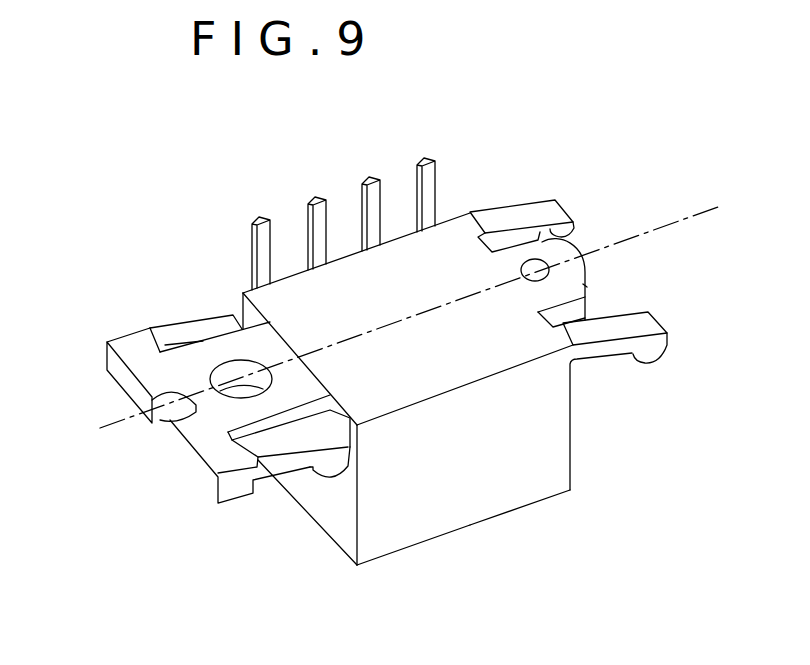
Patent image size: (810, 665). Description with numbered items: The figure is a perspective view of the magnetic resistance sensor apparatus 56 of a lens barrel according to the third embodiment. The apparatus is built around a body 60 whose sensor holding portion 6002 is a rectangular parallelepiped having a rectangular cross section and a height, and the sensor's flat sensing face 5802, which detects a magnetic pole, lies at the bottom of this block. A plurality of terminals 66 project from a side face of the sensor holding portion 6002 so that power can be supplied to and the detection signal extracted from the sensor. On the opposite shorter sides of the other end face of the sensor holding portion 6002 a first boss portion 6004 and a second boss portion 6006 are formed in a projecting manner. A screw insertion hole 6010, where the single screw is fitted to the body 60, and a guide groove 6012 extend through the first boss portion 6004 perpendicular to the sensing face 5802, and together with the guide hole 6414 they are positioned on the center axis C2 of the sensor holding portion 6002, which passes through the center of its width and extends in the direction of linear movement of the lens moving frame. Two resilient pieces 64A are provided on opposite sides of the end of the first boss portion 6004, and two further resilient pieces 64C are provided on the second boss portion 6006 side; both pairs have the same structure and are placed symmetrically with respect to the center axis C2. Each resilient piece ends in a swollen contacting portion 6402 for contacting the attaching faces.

The magnetic resistance sensor apparatus 56 is at (607, 133).
The terminals 66 is at (428, 157).
The resilient pieces 64C is at (531, 212).
The guide hole 6414 is at (544, 262).
The center axis C2 is at (697, 213).
The second boss portion 6006 is at (572, 273).
The contacting portion 6402 is at (332, 474).
The resilient pieces 64A is at (188, 328).
The screw insertion hole 6010 is at (245, 358).
The first boss portion 6004 is at (188, 366).
The guide groove 6012 is at (172, 417).
The body 60 is at (537, 483).
The sensor holding portion 6002 is at (495, 505).
The sensing face 5802 is at (442, 535).